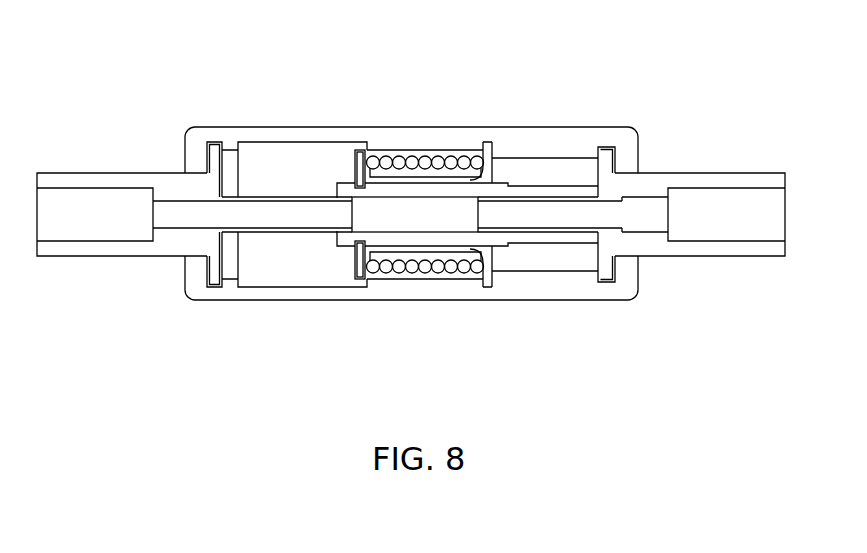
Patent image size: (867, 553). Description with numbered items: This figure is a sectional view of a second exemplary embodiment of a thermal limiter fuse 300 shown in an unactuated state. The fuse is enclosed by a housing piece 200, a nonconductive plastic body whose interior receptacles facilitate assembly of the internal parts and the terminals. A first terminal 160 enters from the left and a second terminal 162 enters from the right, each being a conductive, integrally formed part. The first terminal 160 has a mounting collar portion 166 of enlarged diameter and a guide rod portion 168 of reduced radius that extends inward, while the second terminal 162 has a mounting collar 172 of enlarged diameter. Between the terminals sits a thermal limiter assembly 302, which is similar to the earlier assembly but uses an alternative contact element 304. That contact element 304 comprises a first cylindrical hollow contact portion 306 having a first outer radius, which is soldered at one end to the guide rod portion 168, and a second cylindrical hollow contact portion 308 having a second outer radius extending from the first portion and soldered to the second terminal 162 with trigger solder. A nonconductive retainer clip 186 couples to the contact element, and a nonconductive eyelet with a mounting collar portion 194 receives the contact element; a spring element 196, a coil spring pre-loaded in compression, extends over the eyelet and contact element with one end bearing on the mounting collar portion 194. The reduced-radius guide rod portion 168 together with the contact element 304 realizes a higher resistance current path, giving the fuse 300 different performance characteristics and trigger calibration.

The thermal limiter fuse 300 is at (682, 66).
The housing piece 200 is at (328, 127).
The first terminal 160 is at (109, 268).
The second terminal 162 is at (751, 268).
The mounting collar portion 166 is at (213, 276).
The guide rod portion 168 is at (284, 241).
The retainer clip 186 is at (360, 270).
The spring element 196 is at (420, 268).
The mounting collar portion 194 is at (487, 283).
The thermal limiter assembly 302 is at (400, 146).
The first cylindrical hollow contact portion 306 is at (462, 192).
The contact element 304 is at (513, 178).
The second cylindrical hollow contact portion 308 is at (551, 241).
The mounting collar 172 is at (607, 283).